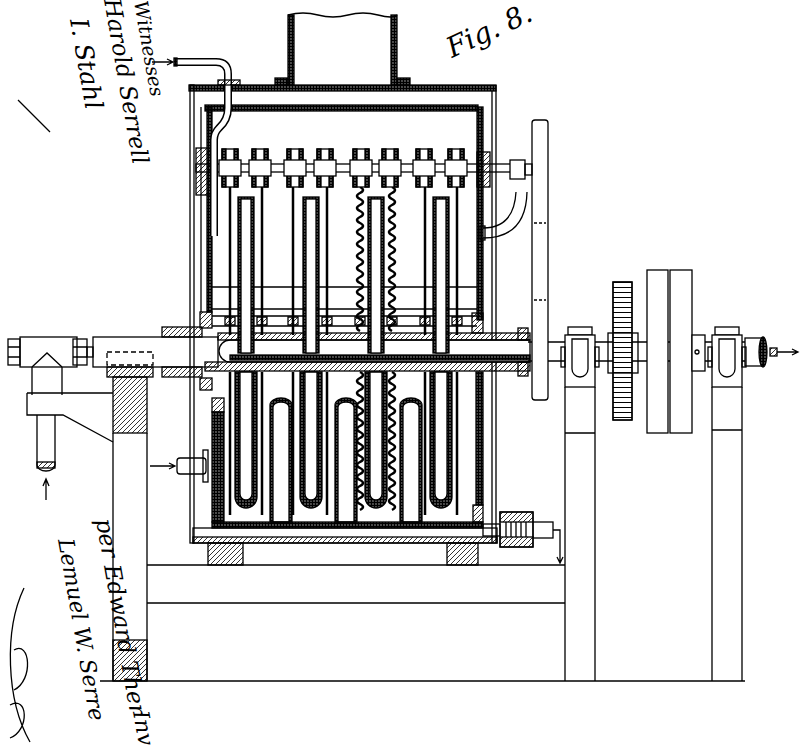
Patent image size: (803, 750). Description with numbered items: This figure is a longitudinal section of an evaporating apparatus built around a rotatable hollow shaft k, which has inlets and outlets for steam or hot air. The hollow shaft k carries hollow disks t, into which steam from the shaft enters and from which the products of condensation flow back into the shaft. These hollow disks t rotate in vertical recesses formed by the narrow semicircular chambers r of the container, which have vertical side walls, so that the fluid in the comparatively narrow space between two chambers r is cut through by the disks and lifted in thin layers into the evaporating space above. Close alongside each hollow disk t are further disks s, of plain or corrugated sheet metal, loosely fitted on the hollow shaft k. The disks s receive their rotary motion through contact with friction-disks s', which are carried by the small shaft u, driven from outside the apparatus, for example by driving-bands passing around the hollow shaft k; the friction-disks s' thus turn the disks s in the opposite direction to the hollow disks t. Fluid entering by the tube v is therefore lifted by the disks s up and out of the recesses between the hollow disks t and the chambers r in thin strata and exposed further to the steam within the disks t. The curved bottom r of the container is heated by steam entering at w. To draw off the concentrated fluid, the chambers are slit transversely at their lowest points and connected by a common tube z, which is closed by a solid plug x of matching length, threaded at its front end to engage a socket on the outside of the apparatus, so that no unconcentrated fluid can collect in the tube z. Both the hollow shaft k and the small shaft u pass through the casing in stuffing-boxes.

The hollow shaft k is at (761, 334).
The tube v is at (208, 47).
The friction-disks s' is at (355, 158).
The shaft u is at (506, 193).
The disks s is at (342, 356).
The hollow disks t is at (343, 352).
The container chambers r is at (341, 460).
The steam inlet w is at (188, 464).
The solid plug x is at (430, 546).
The tube z is at (347, 542).